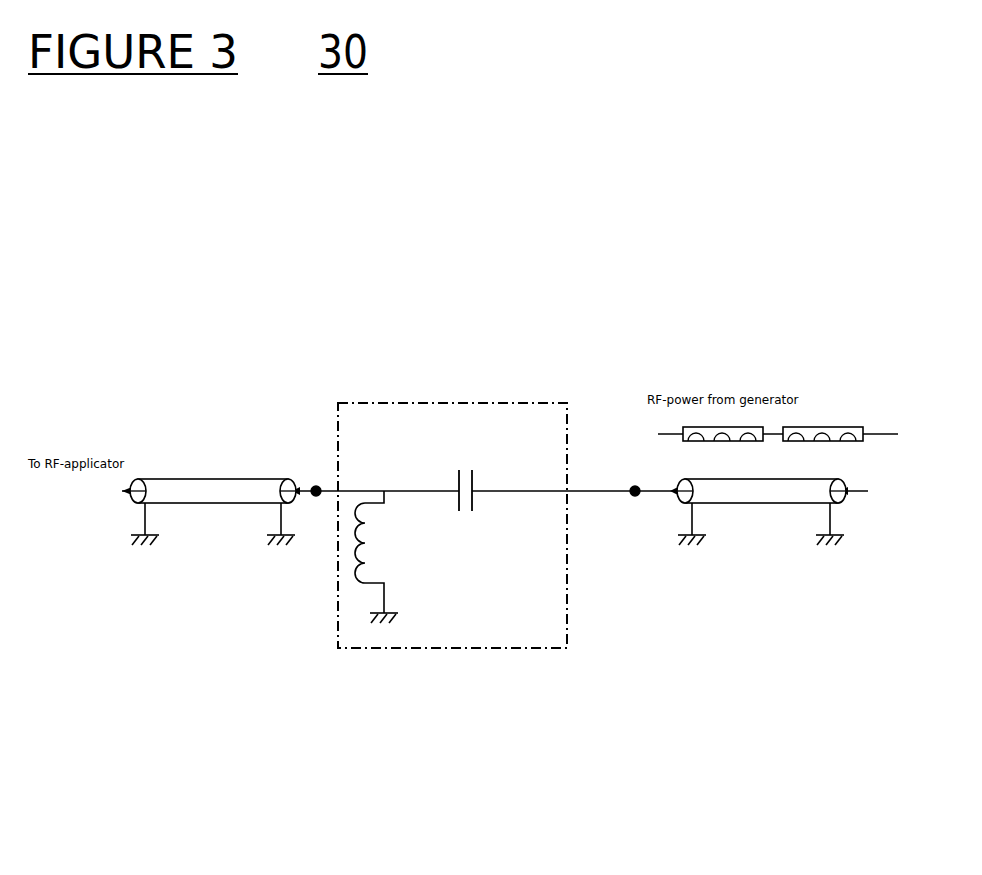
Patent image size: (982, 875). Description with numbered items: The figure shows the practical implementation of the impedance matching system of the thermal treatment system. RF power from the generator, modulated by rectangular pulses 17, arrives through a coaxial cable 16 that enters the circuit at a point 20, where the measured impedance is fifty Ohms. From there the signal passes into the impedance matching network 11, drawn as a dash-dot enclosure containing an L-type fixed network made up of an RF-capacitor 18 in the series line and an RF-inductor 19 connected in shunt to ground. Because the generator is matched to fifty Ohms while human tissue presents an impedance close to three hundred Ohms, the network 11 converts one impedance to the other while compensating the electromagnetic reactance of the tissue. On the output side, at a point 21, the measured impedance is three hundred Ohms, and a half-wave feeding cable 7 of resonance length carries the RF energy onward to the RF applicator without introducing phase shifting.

The feeding cable 7 is at (213, 439).
The impedance matching network 11 is at (487, 459).
The coaxial cable 16 is at (761, 540).
The output RF power signal 17 is at (778, 378).
The RF-capacitor 18 is at (558, 569).
The RF-inductor 19 is at (417, 591).
The point 20 is at (751, 611).
The point 21 is at (262, 555).